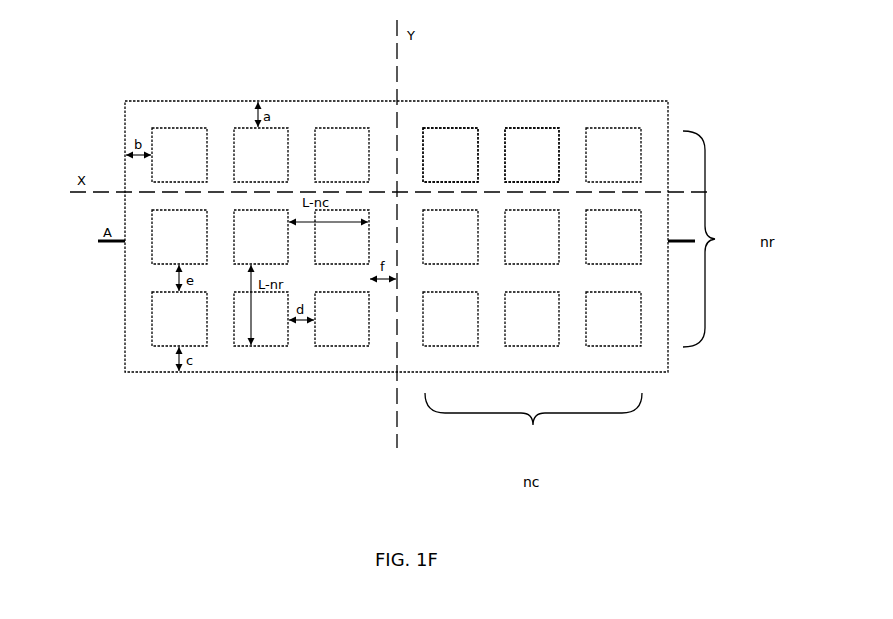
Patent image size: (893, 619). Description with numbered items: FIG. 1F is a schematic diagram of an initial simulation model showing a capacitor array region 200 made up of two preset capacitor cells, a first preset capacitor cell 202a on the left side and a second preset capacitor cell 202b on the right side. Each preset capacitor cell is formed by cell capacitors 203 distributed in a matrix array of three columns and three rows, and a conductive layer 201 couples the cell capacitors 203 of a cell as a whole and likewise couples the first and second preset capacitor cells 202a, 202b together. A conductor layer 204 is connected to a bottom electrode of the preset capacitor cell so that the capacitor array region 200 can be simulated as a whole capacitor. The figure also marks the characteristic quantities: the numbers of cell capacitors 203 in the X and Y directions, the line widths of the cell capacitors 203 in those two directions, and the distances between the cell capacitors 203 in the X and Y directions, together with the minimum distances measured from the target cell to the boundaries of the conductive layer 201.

The capacitor array region 200 is at (212, 86).
The conductive layer 201 is at (422, 115).
The first preset capacitor cell 202a is at (165, 283).
The second preset capacitor cell 202b is at (566, 143).
The cell capacitors 203 is at (443, 138).
The conductor layer 204 is at (683, 244).